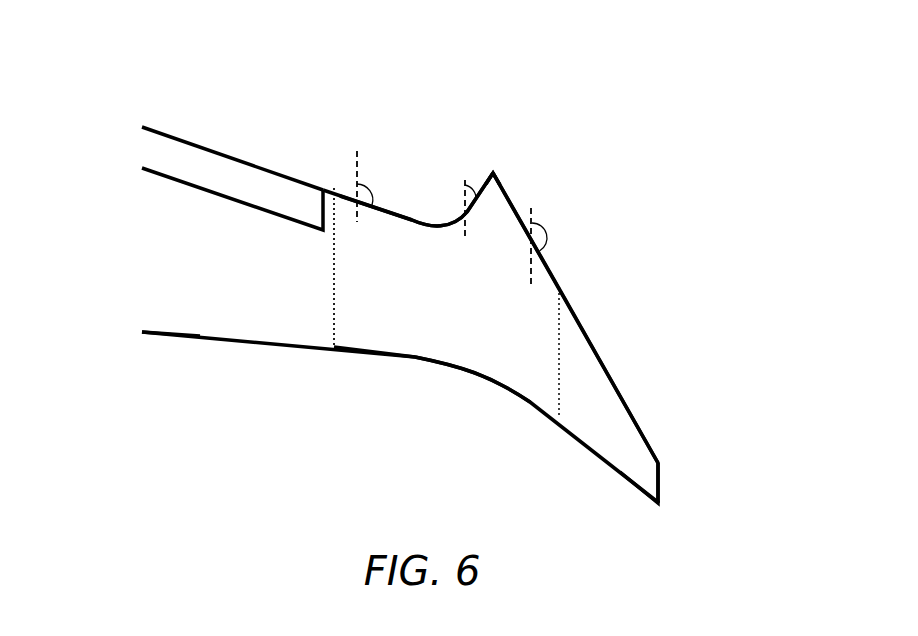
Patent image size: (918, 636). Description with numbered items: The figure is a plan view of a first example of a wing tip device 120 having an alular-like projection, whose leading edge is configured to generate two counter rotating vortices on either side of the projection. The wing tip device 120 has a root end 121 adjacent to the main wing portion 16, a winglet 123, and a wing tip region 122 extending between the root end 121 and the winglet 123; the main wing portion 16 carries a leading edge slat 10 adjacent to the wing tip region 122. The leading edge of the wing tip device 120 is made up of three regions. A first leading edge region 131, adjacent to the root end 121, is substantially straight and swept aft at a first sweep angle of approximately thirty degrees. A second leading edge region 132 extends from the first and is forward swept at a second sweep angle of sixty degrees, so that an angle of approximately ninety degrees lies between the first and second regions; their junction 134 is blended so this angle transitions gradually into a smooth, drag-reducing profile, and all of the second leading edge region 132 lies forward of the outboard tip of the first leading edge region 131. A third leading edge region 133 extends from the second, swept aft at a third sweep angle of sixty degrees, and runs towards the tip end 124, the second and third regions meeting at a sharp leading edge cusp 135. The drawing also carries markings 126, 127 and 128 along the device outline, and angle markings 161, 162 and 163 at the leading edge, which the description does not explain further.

The leading edge slat 10 is at (235, 178).
The main wing portion 16 is at (198, 265).
The wing tip device 120 is at (600, 223).
The root end 121 is at (333, 267).
The wing tip region 122 is at (385, 307).
The winglet 123 is at (593, 395).
The tip end 124 is at (680, 460).
The leading edge 126 is at (342, 197).
The lower curved surface 127 is at (475, 372).
The trailing plane 128 is at (557, 392).
The first leading edge region 131 is at (408, 215).
The second leading edge region 132 is at (481, 193).
The third leading edge region 133 is at (510, 202).
The junction 134 is at (460, 224).
The leading edge cusp 135 is at (493, 173).
The first angle 161 is at (368, 185).
The second angle 162 is at (472, 183).
The third angle 163 is at (545, 228).